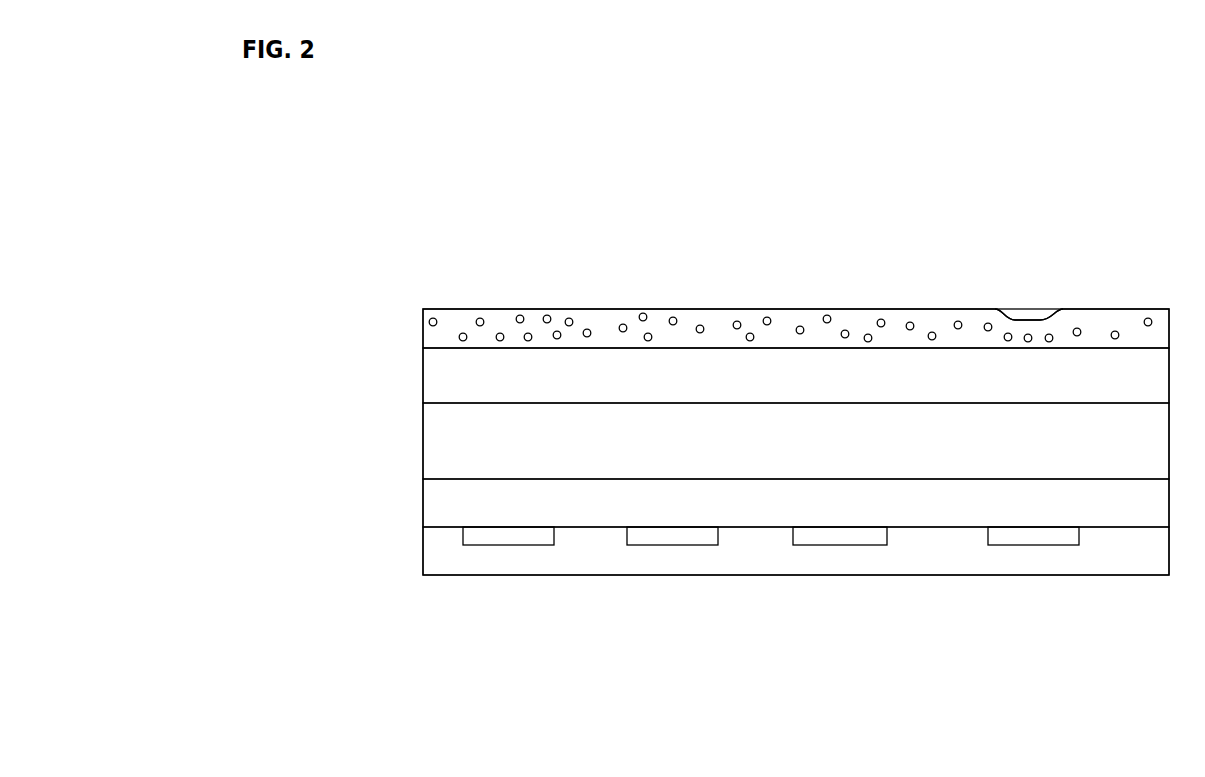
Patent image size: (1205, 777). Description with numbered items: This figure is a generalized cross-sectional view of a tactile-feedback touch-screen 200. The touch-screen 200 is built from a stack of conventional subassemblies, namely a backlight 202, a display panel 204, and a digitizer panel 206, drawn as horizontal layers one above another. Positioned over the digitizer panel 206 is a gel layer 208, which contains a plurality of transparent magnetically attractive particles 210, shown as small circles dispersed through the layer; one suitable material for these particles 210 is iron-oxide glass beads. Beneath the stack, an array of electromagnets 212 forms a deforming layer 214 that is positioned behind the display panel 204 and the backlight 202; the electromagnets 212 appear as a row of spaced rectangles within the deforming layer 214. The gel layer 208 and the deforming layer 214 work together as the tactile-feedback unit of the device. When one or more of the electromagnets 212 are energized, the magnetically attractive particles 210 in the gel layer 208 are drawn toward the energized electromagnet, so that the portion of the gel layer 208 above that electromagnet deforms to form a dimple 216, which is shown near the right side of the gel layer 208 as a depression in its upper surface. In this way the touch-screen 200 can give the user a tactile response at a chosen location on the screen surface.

The tactile-feedback touch-screen 200 is at (796, 382).
The backlight 202 is at (457, 513).
The display panel 204 is at (448, 448).
The digitizer panel 206 is at (452, 388).
The gel layer 208 is at (455, 323).
The magnetically attractive particles 210 is at (878, 321).
The electromagnets 212 is at (663, 533).
The deforming layer 214 is at (482, 566).
The dimple 216 is at (1027, 312).